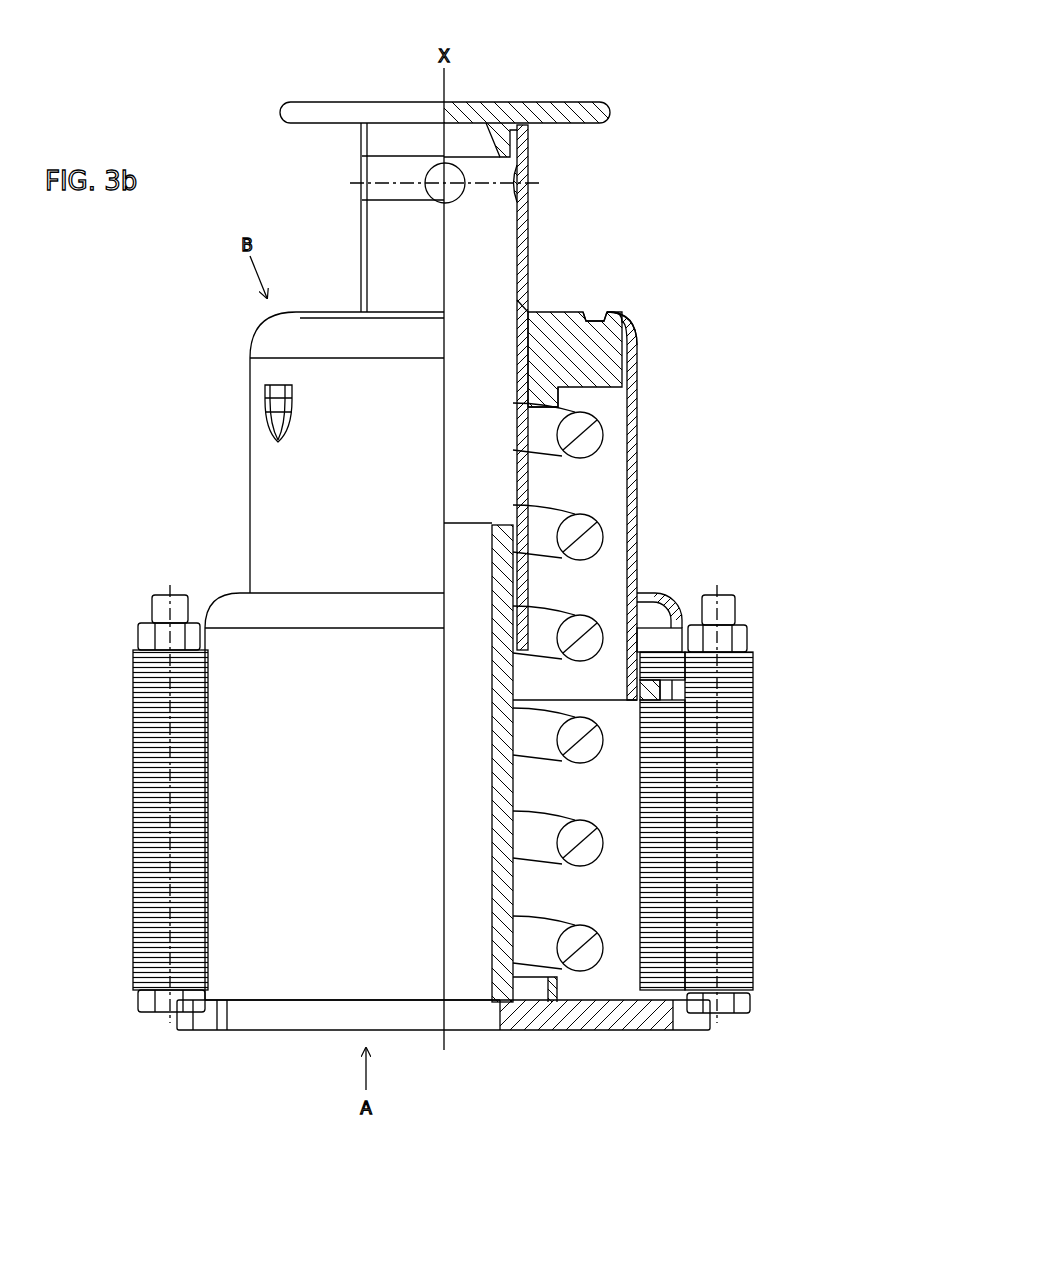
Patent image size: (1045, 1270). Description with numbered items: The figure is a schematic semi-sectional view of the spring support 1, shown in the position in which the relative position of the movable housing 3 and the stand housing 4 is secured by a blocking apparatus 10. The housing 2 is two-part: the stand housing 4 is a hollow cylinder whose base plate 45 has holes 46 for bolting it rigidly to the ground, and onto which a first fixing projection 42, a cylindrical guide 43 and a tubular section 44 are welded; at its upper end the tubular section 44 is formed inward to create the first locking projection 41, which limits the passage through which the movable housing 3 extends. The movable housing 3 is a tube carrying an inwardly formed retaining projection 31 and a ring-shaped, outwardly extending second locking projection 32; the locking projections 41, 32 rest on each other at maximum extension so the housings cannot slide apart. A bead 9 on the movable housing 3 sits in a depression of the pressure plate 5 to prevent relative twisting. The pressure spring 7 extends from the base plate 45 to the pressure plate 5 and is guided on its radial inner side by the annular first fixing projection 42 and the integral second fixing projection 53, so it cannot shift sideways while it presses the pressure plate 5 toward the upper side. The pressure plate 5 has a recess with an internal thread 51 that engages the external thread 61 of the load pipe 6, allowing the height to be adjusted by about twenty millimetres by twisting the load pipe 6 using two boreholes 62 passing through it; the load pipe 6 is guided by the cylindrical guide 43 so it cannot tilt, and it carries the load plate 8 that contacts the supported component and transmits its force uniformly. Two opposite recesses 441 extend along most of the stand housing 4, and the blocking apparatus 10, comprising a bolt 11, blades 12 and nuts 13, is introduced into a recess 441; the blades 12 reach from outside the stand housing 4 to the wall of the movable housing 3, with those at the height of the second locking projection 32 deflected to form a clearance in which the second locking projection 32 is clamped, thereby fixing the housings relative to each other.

The spring support 1 is at (713, 85).
The housing 2 is at (667, 472).
The movable housing 3 is at (636, 412).
The stand housing 4 is at (270, 673).
The pressure plate 5 is at (571, 324).
The load pipe 6 is at (529, 250).
The pressure spring 7 is at (579, 949).
The load plate 8 is at (492, 117).
The bead 9 is at (280, 408).
The blocking apparatus 10 is at (113, 607).
The bolt 11 is at (162, 612).
The blades 12 is at (135, 773).
The nuts 13 is at (145, 638).
The retaining projection 31 is at (623, 330).
The second locking projection 32 is at (683, 622).
The first locking projection 41 is at (667, 595).
The first fixing projection 42 is at (560, 1022).
The cylindrical guide 43 is at (502, 982).
The tubular section 44 is at (282, 643).
The recesses 441 is at (757, 688).
The base plate 45 is at (253, 1010).
The holes 46 is at (682, 1018).
The internal thread 51 is at (593, 318).
The second fixing projection 53 is at (550, 390).
The external thread 61 is at (531, 313).
The boreholes 62 is at (462, 180).